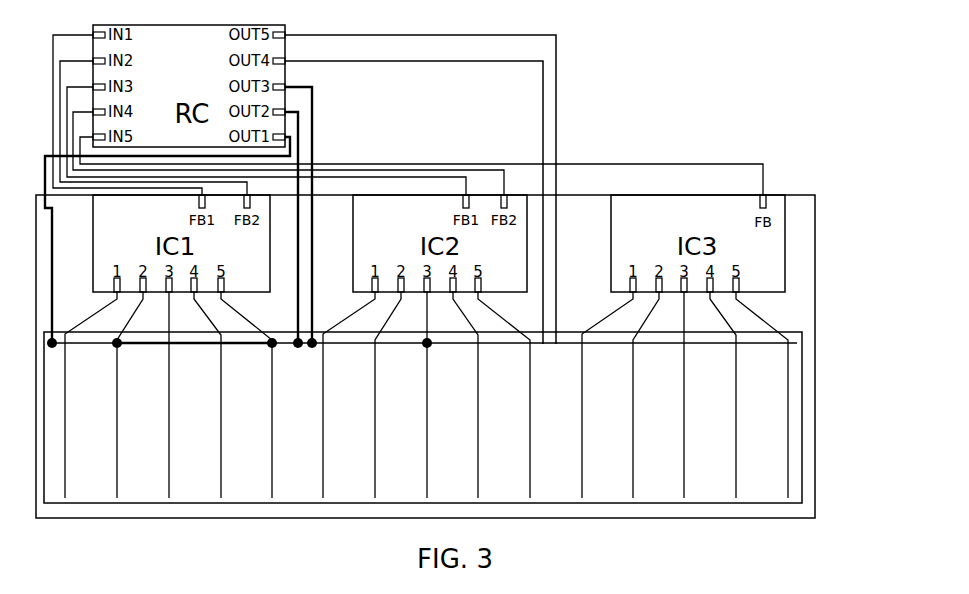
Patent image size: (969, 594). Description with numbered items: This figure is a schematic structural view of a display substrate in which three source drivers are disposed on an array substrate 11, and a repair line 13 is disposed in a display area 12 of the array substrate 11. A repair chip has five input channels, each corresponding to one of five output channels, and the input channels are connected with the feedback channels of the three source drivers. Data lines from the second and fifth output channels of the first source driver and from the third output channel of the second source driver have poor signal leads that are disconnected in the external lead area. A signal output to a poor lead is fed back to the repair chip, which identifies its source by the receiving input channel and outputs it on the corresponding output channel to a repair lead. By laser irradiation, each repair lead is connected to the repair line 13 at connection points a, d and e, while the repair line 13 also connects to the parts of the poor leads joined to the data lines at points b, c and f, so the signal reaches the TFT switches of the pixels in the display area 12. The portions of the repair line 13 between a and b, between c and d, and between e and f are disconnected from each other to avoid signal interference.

The array substrate 11 is at (815, 284).
The display area 12 is at (802, 455).
The repair line 13 is at (762, 345).